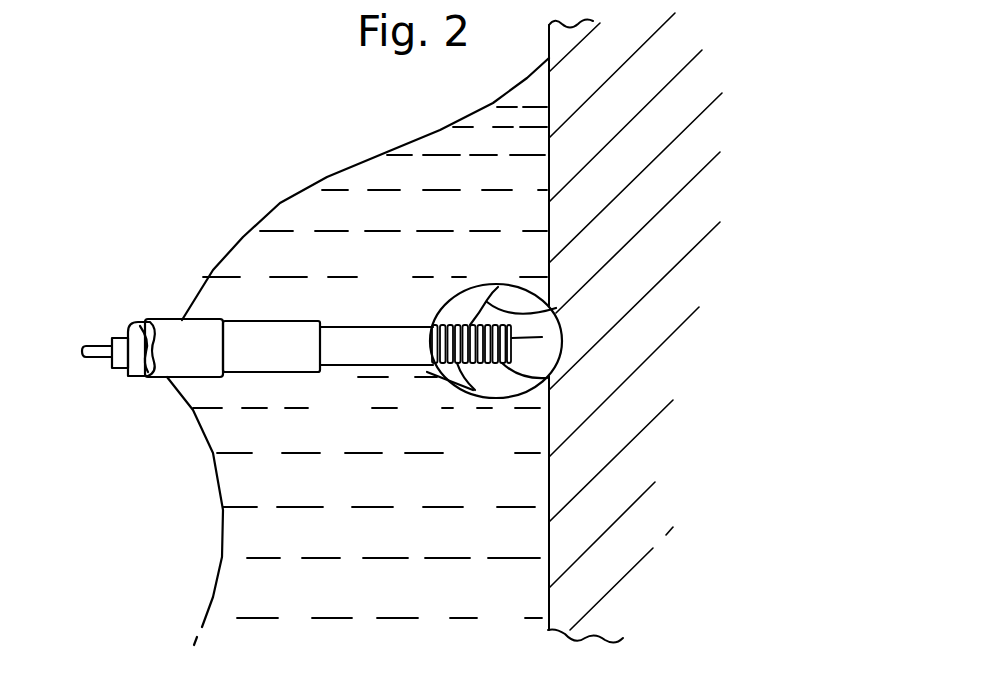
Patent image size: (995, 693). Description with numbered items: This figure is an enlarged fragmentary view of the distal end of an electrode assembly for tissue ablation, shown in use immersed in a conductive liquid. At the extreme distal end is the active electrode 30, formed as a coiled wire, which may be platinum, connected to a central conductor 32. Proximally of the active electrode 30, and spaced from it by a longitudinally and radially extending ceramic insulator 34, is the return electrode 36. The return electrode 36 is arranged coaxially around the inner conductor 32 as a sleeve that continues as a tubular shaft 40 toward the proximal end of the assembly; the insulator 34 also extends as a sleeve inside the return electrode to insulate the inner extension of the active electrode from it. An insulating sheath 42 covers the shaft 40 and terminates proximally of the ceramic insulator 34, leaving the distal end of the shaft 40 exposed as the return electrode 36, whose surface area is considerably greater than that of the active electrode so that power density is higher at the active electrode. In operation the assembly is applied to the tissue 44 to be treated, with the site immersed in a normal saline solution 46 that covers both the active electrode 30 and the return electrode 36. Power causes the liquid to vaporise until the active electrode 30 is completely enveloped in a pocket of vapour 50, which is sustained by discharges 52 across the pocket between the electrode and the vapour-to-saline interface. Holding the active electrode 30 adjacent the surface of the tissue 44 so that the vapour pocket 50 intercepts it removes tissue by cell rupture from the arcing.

The active electrode 30 is at (462, 378).
The central conductor 32 is at (106, 360).
The ceramic insulator 34 is at (407, 327).
The return electrode 36 is at (313, 374).
The tubular shaft 40 is at (138, 322).
The insulating sheath 42 is at (205, 330).
The tissue 44 is at (547, 575).
The normal saline solution 46 is at (328, 178).
The pocket of vapour 50 is at (503, 400).
The discharges 52 is at (487, 287).